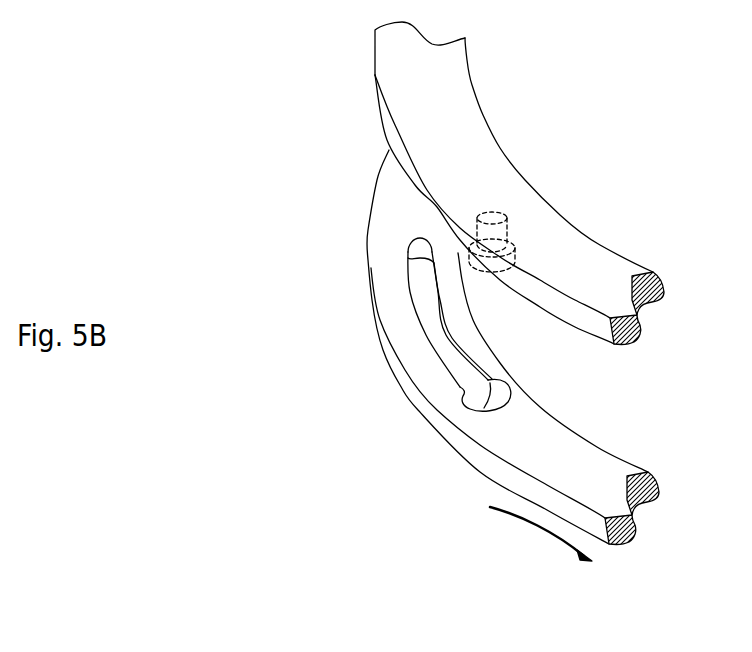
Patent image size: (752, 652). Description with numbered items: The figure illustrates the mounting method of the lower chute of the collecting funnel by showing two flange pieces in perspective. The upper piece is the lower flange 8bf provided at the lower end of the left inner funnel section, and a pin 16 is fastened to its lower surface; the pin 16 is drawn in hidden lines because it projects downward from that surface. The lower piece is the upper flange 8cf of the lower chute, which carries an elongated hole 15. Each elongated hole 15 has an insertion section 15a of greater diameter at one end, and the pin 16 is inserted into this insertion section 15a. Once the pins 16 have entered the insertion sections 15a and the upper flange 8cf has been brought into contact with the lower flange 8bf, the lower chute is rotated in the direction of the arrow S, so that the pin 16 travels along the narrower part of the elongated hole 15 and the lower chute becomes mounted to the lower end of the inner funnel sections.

The lower flange 8bf is at (617, 249).
The upper flange 8cf is at (613, 452).
The elongated hole 15 is at (428, 335).
The insertion section 15a is at (467, 403).
The pin 16 is at (522, 253).
The arrow S is at (533, 533).